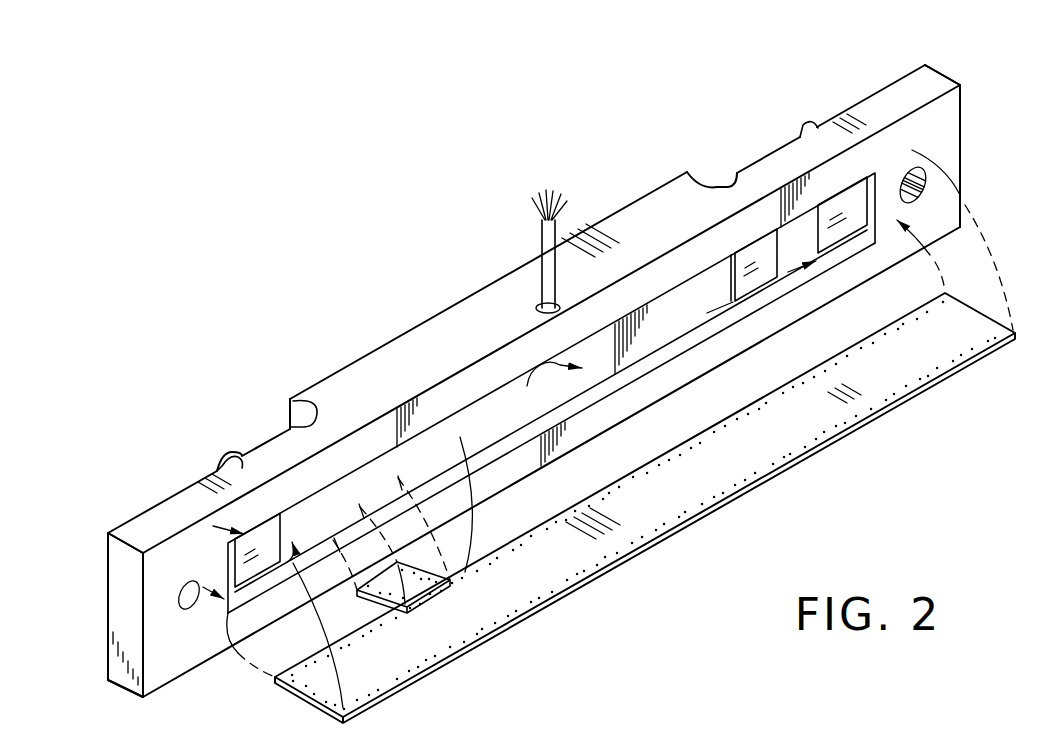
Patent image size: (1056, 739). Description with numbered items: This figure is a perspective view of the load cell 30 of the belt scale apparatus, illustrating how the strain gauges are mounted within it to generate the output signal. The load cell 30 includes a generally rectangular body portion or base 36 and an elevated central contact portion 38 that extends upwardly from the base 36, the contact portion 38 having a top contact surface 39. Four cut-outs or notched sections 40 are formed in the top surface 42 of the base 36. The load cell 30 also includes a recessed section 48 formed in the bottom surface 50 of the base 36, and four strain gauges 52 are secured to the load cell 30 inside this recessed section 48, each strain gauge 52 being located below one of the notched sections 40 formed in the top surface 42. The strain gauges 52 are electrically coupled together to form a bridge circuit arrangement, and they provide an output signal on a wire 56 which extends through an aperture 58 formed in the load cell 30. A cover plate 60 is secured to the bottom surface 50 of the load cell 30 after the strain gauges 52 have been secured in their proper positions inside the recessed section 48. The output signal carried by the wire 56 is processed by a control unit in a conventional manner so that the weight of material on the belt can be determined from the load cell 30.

The load cell 30 is at (315, 298).
The base 36 is at (148, 521).
The contact portion 38 is at (686, 166).
The top contact surface 39 is at (433, 316).
The notched sections 40 is at (232, 457).
The top surface 42 is at (889, 82).
The recessed section 48 is at (480, 468).
The bottom surface 50 is at (948, 118).
The strain gauges 52 is at (250, 533).
The wire 56 is at (557, 228).
The aperture 58 is at (537, 308).
The cover plate 60 is at (519, 613).